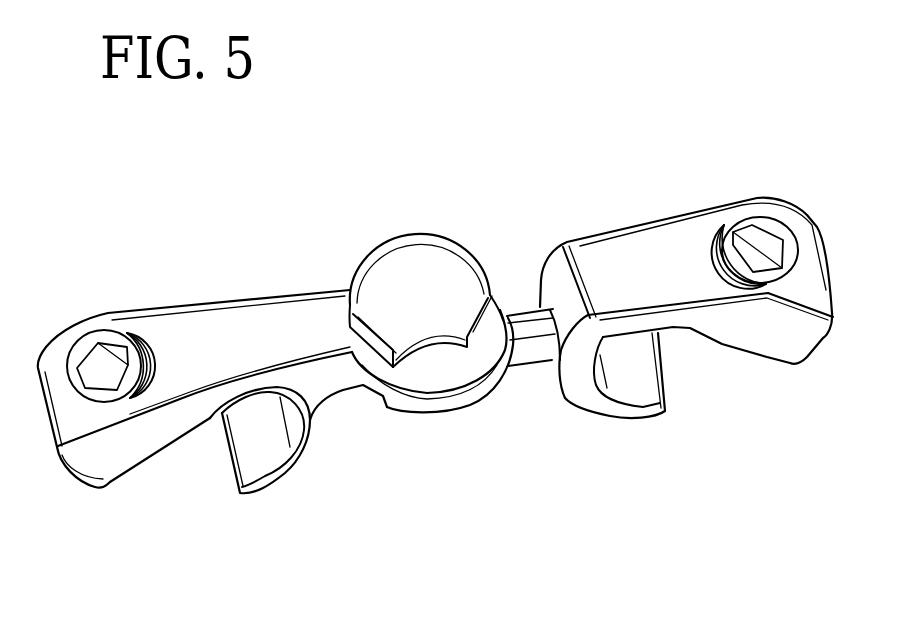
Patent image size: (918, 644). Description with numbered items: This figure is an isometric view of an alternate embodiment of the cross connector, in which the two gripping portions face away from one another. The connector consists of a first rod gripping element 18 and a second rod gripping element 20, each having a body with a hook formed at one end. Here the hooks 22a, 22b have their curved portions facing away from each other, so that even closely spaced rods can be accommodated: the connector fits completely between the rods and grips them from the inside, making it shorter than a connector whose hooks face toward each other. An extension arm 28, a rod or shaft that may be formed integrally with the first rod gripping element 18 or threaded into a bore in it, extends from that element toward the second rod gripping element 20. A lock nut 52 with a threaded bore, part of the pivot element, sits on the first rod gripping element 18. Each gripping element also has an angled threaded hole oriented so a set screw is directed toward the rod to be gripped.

The first rod gripping element 18 is at (137, 308).
The second rod gripping element 20 is at (656, 223).
The hook 22a is at (240, 495).
The hook 22b is at (664, 419).
The extension arm 28 is at (521, 367).
The lock nut 52 is at (440, 268).